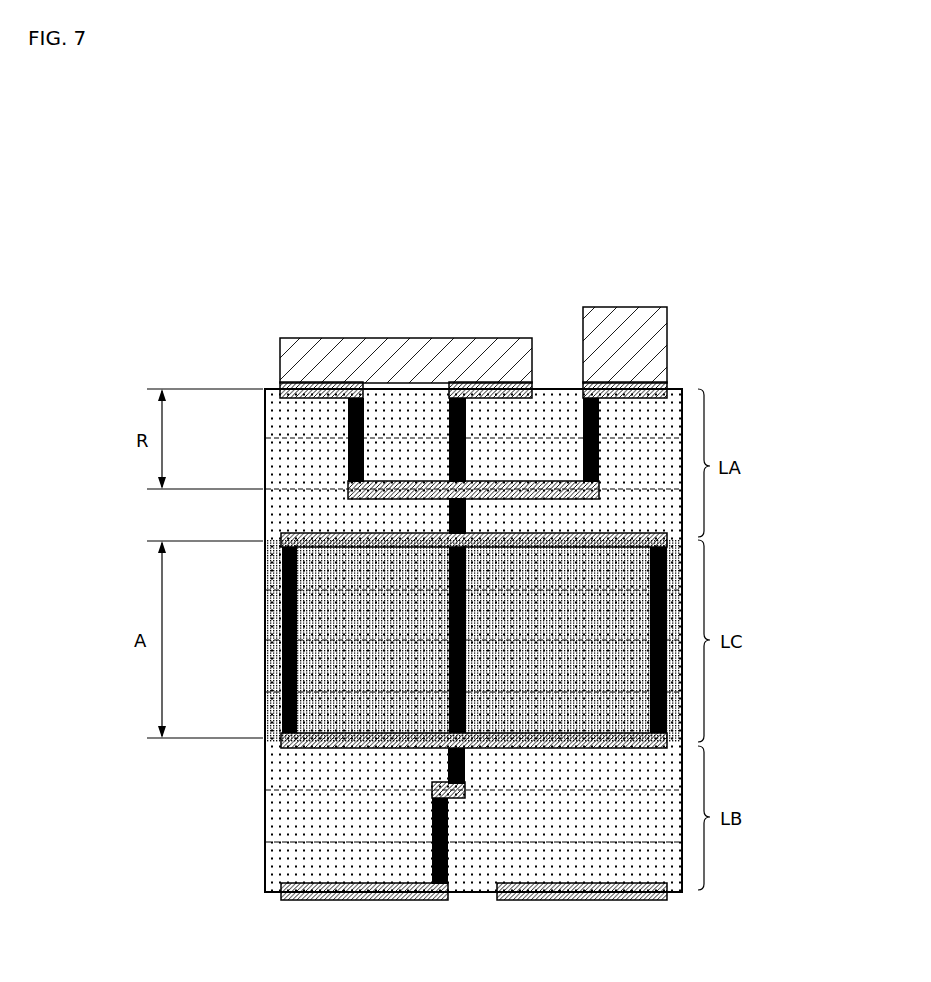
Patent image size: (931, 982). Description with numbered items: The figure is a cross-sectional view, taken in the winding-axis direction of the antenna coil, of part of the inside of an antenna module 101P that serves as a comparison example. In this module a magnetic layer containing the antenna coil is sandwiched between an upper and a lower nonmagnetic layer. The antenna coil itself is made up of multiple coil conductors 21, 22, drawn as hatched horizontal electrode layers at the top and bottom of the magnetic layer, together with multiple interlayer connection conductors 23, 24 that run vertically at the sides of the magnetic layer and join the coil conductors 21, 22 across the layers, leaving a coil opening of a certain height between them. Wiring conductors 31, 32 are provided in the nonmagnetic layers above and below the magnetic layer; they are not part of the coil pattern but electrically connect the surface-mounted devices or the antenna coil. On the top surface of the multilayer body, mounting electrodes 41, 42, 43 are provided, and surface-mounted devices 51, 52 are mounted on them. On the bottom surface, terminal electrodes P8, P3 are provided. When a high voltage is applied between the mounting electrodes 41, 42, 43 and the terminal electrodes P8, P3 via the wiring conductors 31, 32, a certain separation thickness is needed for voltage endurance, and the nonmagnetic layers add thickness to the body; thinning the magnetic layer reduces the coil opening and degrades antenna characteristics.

The antenna module 101P is at (756, 192).
The coil conductor 21 is at (548, 490).
The coil conductor 22 is at (337, 744).
The interlayer connection conductor 23 is at (667, 673).
The interlayer connection conductor 24 is at (283, 665).
The wiring conductor 31 is at (367, 498).
The wiring conductor 32 is at (434, 776).
The mounting electrode 41 is at (318, 384).
The mounting electrode 42 is at (488, 386).
The mounting electrode 43 is at (641, 387).
The surface-mounted device 51 is at (410, 352).
The surface-mounted device 52 is at (622, 328).
The terminal electrode P8 is at (367, 902).
The terminal electrode P3 is at (592, 902).